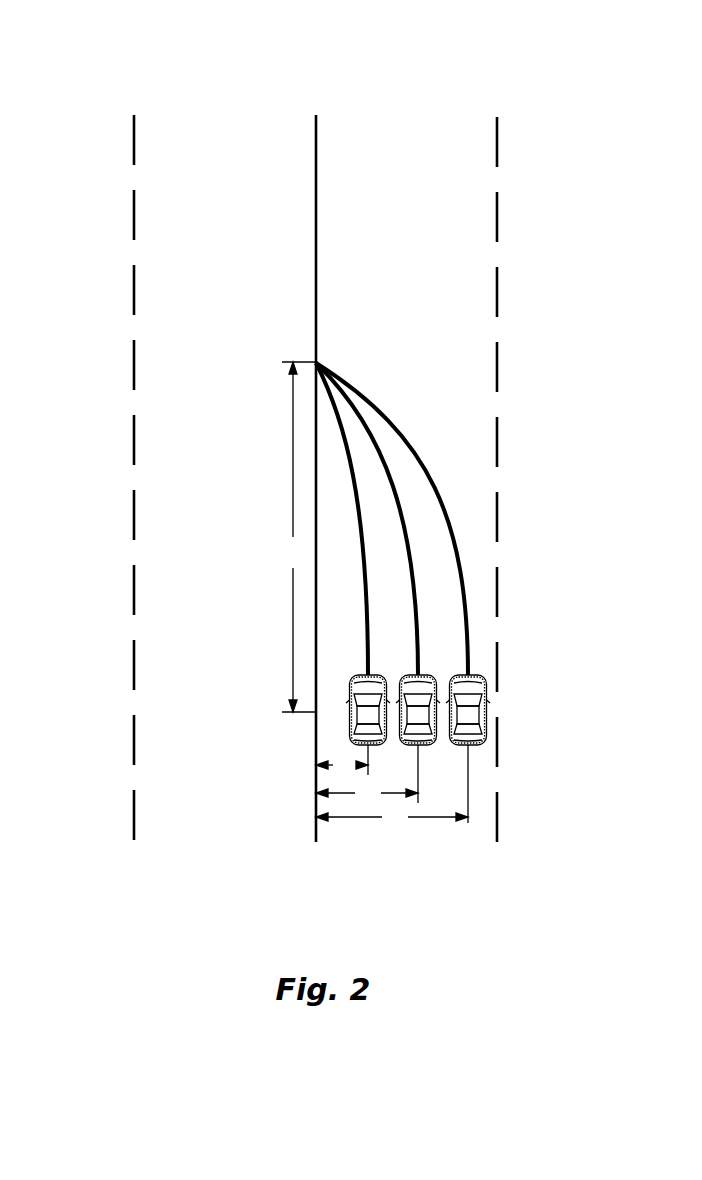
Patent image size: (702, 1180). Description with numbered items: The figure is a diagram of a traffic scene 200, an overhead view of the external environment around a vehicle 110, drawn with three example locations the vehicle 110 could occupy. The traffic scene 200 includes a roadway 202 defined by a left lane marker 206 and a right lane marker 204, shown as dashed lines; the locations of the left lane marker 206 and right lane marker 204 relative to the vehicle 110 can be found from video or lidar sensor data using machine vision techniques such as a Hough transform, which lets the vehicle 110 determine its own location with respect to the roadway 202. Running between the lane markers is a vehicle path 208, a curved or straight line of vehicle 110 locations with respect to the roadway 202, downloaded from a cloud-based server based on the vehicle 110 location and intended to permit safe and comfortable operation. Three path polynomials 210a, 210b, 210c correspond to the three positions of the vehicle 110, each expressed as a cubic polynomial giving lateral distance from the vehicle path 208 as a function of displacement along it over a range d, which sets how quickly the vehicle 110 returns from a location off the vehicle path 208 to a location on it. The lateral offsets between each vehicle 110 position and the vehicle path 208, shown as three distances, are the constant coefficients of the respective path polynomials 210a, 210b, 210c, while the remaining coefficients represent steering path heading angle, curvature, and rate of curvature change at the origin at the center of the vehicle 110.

The traffic scene 200 is at (311, 36).
The roadway 202 is at (226, 798).
The right lane marker 204 is at (496, 830).
The left lane marker 206 is at (122, 798).
The vehicle path 208 is at (315, 830).
The path polynomial 210a is at (345, 452).
The path polynomial 210b is at (380, 443).
The path polynomial 210c is at (415, 440).
The vehicle 110 is at (508, 710).